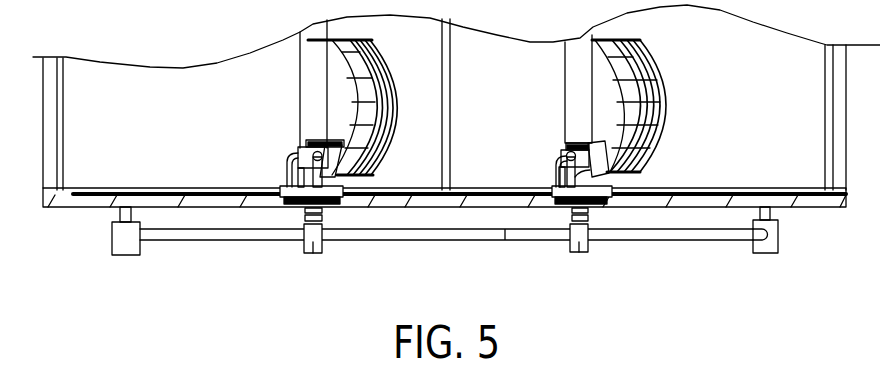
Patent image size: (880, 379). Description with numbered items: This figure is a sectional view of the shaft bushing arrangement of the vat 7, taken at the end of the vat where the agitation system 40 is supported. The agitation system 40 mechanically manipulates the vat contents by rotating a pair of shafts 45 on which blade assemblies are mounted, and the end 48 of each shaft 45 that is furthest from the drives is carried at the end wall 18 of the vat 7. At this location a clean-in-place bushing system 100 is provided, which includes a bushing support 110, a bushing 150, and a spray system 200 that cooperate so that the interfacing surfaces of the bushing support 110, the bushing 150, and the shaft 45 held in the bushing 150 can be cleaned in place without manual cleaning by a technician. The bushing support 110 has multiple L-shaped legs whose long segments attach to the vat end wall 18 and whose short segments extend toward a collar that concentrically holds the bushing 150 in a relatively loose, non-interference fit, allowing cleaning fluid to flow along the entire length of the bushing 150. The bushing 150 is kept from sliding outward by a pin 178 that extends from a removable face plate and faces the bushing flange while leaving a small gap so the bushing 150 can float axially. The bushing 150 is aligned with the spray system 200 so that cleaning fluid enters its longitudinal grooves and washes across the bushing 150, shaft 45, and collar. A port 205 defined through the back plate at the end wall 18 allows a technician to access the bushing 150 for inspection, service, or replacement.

The vat 7 is at (823, 212).
The end wall 18 is at (713, 203).
The agitation system 40 is at (655, 49).
The shaft 45 is at (300, 88).
The shaft end 48 is at (297, 209).
The clean-in-place bushing system 100 is at (299, 216).
The bushing support 110 is at (277, 176).
The bushing 150 is at (281, 174).
The pin 178 is at (280, 186).
The spray system 200 is at (326, 250).
The port 205 is at (310, 243).